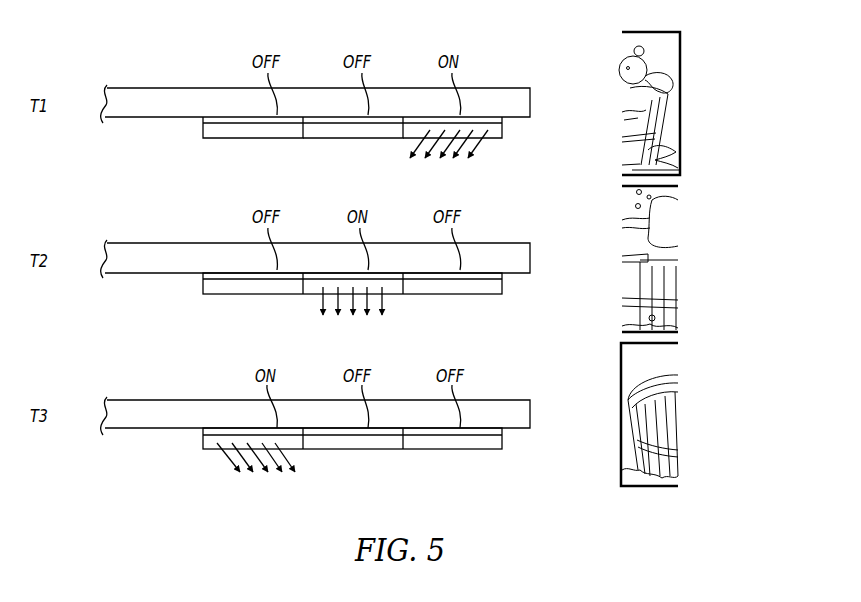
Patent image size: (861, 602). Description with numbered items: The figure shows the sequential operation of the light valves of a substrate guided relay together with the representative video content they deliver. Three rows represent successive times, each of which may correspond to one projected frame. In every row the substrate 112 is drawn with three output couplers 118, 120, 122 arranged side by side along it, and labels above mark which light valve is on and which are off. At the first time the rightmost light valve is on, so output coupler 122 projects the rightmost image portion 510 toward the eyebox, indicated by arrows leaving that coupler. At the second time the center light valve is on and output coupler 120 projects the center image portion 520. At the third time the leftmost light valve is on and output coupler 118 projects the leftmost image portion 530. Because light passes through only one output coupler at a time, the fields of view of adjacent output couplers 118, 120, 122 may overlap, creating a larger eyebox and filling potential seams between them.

The substrate 112 is at (168, 87).
The leftmost output coupler 118 is at (208, 140).
The middle output coupler 120 is at (306, 140).
The rightmost output coupler 122 is at (501, 140).
The rightmost image portion 510 is at (680, 35).
The center image portion 520 is at (678, 218).
The leftmost image portion 530 is at (678, 415).